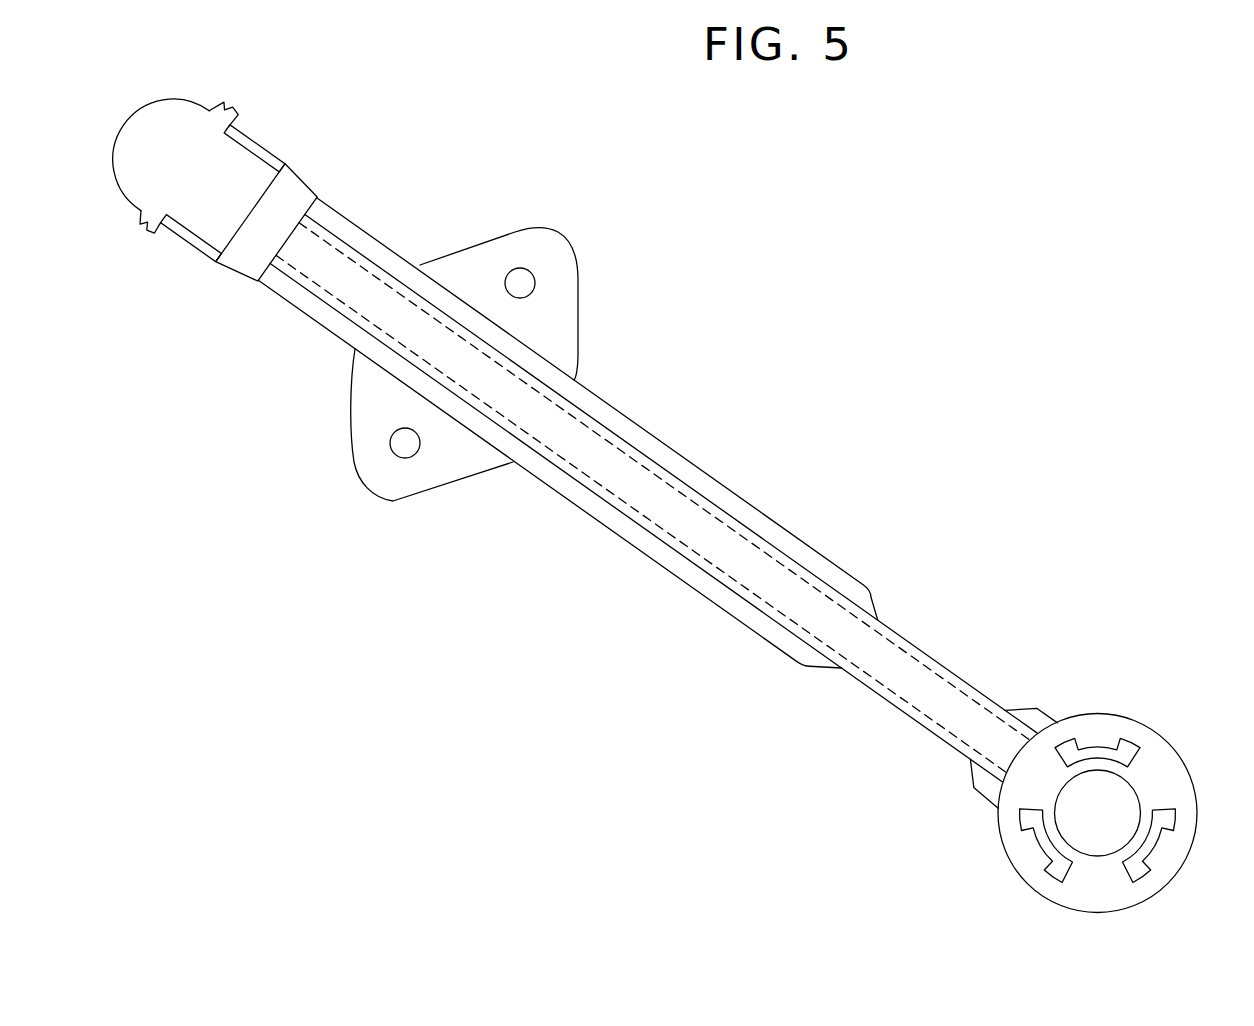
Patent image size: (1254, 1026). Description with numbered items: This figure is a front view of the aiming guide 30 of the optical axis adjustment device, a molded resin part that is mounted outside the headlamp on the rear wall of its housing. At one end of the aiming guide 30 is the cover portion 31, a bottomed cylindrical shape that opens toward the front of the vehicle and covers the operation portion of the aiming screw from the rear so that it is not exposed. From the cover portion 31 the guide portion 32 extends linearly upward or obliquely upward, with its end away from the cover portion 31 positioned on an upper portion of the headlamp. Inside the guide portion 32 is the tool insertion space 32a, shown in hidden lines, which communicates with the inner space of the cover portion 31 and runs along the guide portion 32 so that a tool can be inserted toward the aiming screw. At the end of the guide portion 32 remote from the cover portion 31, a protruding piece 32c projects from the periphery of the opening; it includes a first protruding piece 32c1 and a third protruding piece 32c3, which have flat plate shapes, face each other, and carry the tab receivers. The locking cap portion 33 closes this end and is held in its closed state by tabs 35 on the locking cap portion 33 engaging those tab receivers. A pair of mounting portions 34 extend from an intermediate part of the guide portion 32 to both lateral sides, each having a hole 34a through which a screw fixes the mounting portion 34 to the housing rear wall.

The aiming guide 30 is at (752, 397).
The cover portion 31 is at (1157, 762).
The guide portion 32 is at (918, 672).
The tool insertion space 32a is at (819, 590).
The protruding piece 32c is at (330, 230).
The first protruding piece 32c1 is at (187, 238).
The third protruding piece 32c3 is at (263, 147).
The locking cap portion 33 is at (172, 112).
The mounting portion 34 is at (563, 267).
The hole 34a is at (524, 277).
The tab 35 is at (238, 113).